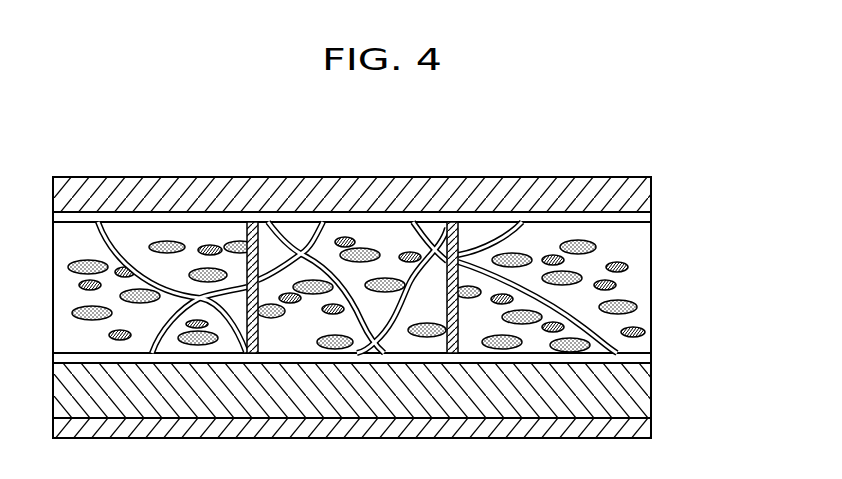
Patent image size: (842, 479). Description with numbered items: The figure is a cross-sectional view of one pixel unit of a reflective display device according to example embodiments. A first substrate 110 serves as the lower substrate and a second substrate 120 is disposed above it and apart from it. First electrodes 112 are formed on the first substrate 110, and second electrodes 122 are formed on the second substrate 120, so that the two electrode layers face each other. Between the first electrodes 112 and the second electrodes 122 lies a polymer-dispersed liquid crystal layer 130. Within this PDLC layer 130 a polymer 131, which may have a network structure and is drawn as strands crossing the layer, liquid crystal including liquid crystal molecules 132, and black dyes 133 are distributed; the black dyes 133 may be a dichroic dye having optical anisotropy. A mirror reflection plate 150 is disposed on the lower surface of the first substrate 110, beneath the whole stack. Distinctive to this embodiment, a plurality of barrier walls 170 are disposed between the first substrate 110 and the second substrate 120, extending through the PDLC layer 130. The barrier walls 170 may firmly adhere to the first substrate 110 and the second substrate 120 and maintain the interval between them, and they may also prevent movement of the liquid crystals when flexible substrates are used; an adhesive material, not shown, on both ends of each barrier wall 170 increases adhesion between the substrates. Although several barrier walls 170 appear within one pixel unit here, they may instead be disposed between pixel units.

The first substrate 110 is at (651, 391).
The first electrodes 112 is at (651, 358).
The second substrate 120 is at (651, 195).
The second electrodes 122 is at (651, 217).
The polymer-dispersed liquid crystal layer 130 is at (416, 287).
The polymer 131 is at (573, 306).
The liquid crystal molecules 132 is at (637, 307).
The black dyes 133 is at (645, 332).
The mirror reflection plate 150 is at (651, 428).
The barrier walls 170 is at (252, 177).